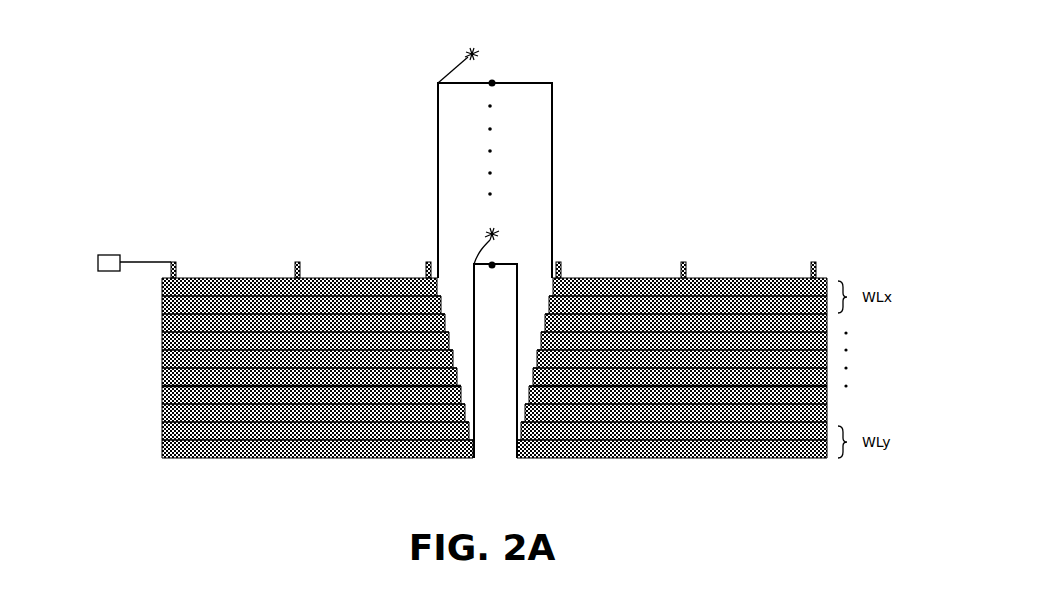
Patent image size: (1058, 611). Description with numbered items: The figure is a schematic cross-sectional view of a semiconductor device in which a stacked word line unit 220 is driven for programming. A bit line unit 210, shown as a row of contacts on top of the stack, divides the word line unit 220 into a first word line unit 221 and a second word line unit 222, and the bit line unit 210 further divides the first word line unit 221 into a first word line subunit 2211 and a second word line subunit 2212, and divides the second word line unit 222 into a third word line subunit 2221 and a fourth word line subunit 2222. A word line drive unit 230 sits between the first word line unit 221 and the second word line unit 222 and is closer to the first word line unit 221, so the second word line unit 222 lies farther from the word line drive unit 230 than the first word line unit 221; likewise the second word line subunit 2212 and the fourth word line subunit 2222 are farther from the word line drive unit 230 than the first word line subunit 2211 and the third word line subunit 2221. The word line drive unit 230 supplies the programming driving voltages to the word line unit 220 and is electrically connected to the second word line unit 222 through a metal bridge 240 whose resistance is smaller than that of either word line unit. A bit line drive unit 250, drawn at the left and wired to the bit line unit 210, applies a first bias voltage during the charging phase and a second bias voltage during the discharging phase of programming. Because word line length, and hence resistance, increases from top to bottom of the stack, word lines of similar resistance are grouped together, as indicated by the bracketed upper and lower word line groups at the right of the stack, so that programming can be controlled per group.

The bit line unit 210 is at (175, 262).
The word line unit 220 is at (152, 283).
The first word line unit 221 is at (238, 192).
The first word line subunit 2211 is at (354, 264).
The second word line subunit 2212 is at (224, 264).
The second word line unit 222 is at (768, 190).
The third word line subunit 2221 is at (624, 266).
The fourth word line subunit 2222 is at (736, 266).
The word line drive unit 230 is at (478, 55).
The metal bridge 240 is at (494, 81).
The bit line drive unit 250 is at (106, 255).